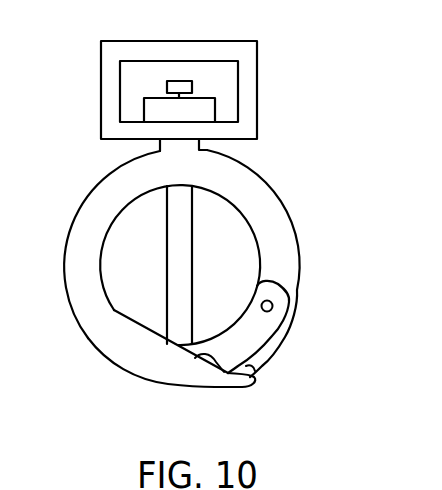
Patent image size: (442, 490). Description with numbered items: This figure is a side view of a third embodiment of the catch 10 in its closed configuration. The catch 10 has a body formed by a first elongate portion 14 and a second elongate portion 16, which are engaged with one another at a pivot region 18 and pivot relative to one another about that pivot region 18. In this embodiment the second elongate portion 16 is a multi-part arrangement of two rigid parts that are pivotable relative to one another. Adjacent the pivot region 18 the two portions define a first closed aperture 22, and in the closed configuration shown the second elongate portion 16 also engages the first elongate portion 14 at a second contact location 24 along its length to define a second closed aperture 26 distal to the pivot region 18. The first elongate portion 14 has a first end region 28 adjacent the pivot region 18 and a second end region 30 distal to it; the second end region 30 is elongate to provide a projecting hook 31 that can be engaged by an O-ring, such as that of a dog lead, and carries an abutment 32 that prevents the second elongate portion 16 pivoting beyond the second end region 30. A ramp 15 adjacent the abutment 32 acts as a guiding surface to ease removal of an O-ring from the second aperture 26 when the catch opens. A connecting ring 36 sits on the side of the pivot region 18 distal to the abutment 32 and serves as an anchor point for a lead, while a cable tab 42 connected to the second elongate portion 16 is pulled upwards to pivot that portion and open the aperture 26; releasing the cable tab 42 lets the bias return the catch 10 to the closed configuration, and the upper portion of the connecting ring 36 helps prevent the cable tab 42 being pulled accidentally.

The catch 10 is at (327, 156).
The first elongate portion 14 is at (97, 322).
The ramp 15 is at (150, 337).
The second elongate portion 16 is at (248, 333).
The pivot region 18 is at (273, 306).
The first closed aperture 22 is at (232, 258).
The second contact location 24 is at (238, 388).
The second closed aperture 26 is at (133, 255).
The first end region 28 is at (284, 282).
The second end region 30 is at (163, 372).
The projecting hook 31 is at (250, 367).
The abutment 32 is at (200, 360).
The connecting ring 36 is at (260, 58).
The cable tab 42 is at (177, 81).